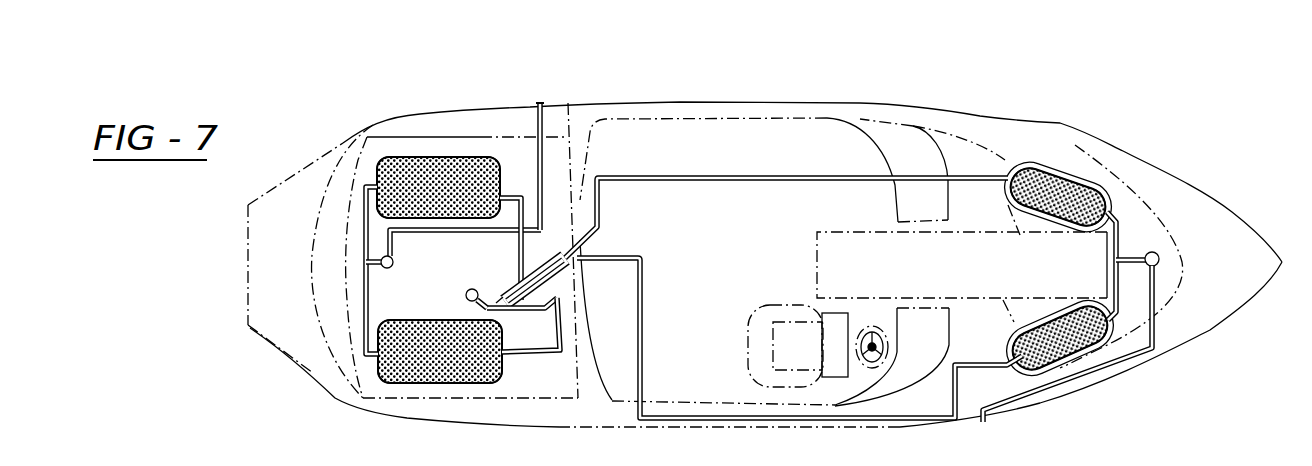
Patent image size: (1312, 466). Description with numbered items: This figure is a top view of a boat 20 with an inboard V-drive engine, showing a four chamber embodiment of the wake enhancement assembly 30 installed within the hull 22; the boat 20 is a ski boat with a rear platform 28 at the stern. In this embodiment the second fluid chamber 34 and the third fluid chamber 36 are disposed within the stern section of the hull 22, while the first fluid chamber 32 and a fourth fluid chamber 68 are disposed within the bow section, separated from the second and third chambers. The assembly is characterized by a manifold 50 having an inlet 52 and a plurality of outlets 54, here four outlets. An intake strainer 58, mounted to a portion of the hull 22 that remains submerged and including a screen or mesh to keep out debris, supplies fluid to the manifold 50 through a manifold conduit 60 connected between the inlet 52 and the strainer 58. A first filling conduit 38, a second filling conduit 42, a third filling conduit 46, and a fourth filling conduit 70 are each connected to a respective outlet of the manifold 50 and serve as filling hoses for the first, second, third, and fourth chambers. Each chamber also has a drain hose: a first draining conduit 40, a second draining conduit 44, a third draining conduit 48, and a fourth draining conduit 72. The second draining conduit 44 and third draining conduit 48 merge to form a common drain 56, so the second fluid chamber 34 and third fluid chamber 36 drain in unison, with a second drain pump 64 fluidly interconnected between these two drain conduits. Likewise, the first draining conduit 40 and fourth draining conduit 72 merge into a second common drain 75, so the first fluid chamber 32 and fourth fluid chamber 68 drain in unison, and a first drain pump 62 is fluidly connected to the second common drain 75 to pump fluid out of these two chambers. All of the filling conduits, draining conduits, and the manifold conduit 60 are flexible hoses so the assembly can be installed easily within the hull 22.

The boat 20 is at (1163, 147).
The hull 22 is at (950, 125).
The rear platform 28 is at (267, 263).
The wake enhancement assembly 30 is at (676, 263).
The first fluid chamber 32 is at (1072, 345).
The second fluid chamber 34 is at (420, 375).
The third fluid chamber 36 is at (398, 172).
The first filling conduit 38 is at (907, 415).
The first draining conduit 40 is at (1112, 293).
The second filling conduit 42 is at (535, 353).
The second draining conduit 44 is at (317, 377).
The third filling conduit 46 is at (520, 255).
The third draining conduit 48 is at (366, 222).
The manifold 50 is at (517, 311).
The inlet 52 is at (493, 297).
The outlets 54 is at (544, 293).
The common drain 56 is at (545, 155).
The intake strainer 58 is at (470, 289).
The manifold conduit 60 is at (484, 300).
The first drain pump 62 is at (1158, 253).
The second drain pump 64 is at (383, 265).
The fourth fluid chamber 68 is at (1062, 190).
The fourth filling conduit 70 is at (775, 181).
The fourth draining conduit 72 is at (1118, 243).
The second common drain 75 is at (1155, 333).